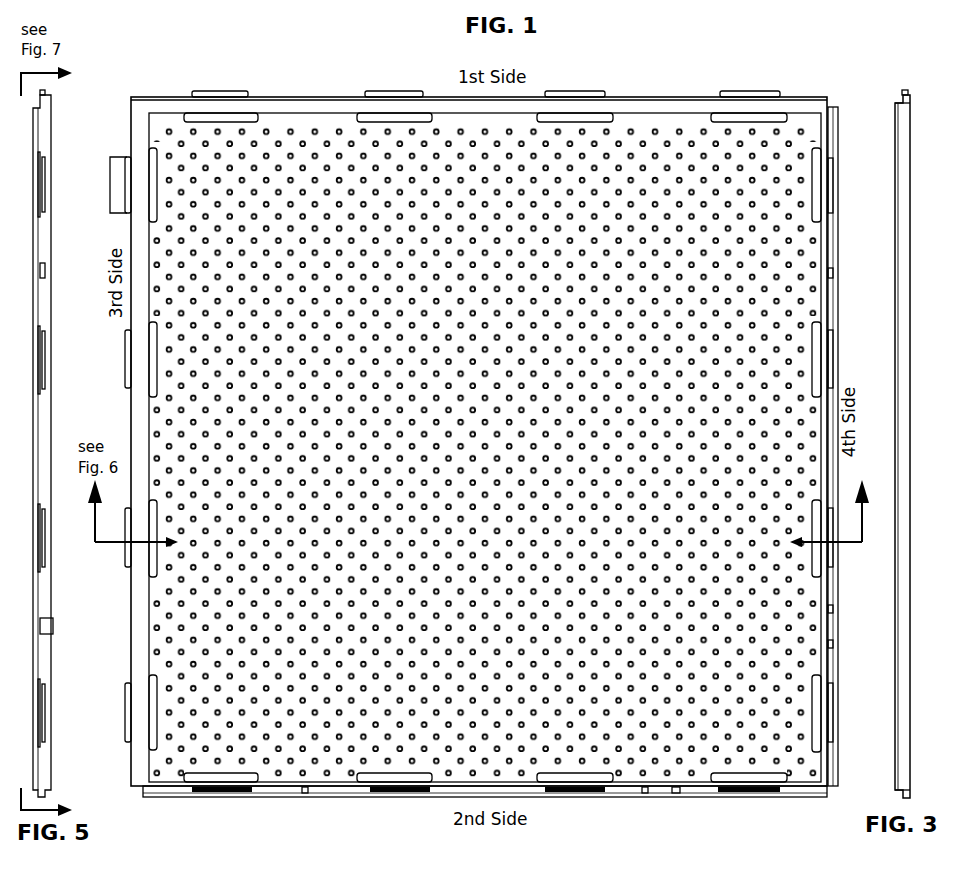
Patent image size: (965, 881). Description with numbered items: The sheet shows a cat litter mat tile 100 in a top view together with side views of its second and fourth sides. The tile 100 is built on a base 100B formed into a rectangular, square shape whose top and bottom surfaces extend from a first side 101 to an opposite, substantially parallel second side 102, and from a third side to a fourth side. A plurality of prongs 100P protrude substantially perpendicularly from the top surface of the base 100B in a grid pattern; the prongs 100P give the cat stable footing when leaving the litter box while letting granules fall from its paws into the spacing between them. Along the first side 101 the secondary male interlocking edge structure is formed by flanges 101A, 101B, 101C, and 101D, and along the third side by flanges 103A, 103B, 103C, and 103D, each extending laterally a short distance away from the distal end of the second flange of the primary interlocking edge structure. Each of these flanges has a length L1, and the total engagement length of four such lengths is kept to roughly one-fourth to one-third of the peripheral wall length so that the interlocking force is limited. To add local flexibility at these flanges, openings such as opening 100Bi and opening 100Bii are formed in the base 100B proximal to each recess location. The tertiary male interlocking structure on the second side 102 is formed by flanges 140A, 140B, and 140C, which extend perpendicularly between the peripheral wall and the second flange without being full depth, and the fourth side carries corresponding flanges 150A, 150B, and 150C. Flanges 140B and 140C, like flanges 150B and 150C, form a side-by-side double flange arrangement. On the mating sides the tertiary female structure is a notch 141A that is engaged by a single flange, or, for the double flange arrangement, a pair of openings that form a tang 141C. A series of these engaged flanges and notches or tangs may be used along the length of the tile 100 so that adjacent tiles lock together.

In FIG. 1, the mat tile 100 is at (829, 62).
In FIG. 1, the base 100B is at (304, 118).
In FIG. 1, the prongs 100P is at (657, 125).
In FIG. 1, the opening 100Bi is at (828, 185).
In FIG. 1, the opening 100Bii is at (828, 365).
In FIG. 1, the first side 101 is at (131, 107).
In FIG. 3, the first side 101 is at (894, 107).
In FIG. 1, the second side 102 is at (131, 787).
In FIG. 3, the second side 102 is at (894, 787).
In FIG. 1, the flange 101A is at (221, 89).
In FIG. 1, the flange 101B is at (383, 89).
In FIG. 1, the flange 101C is at (577, 89).
In FIG. 1, the flange 101D is at (745, 89).
In FIG. 1, the flange 103A is at (125, 690).
In FIG. 1, the flange 103B is at (125, 555).
In FIG. 1, the flange 103C is at (125, 348).
In FIG. 1, the flange 103D is at (127, 213).
In FIG. 1, the flange 140A is at (302, 794).
In FIG. 1, the flange 140B is at (641, 792).
In FIG. 1, the flange 140C is at (680, 792).
In FIG. 5, the notch 141A is at (53, 626).
In FIG. 5, the tang 141C is at (45, 272).
In FIG. 1, the flange 150A is at (831, 268).
In FIG. 1, the flange 150B is at (831, 606).
In FIG. 1, the flange 150C is at (831, 647).
In FIG. 1, the length L1 is at (110, 186).